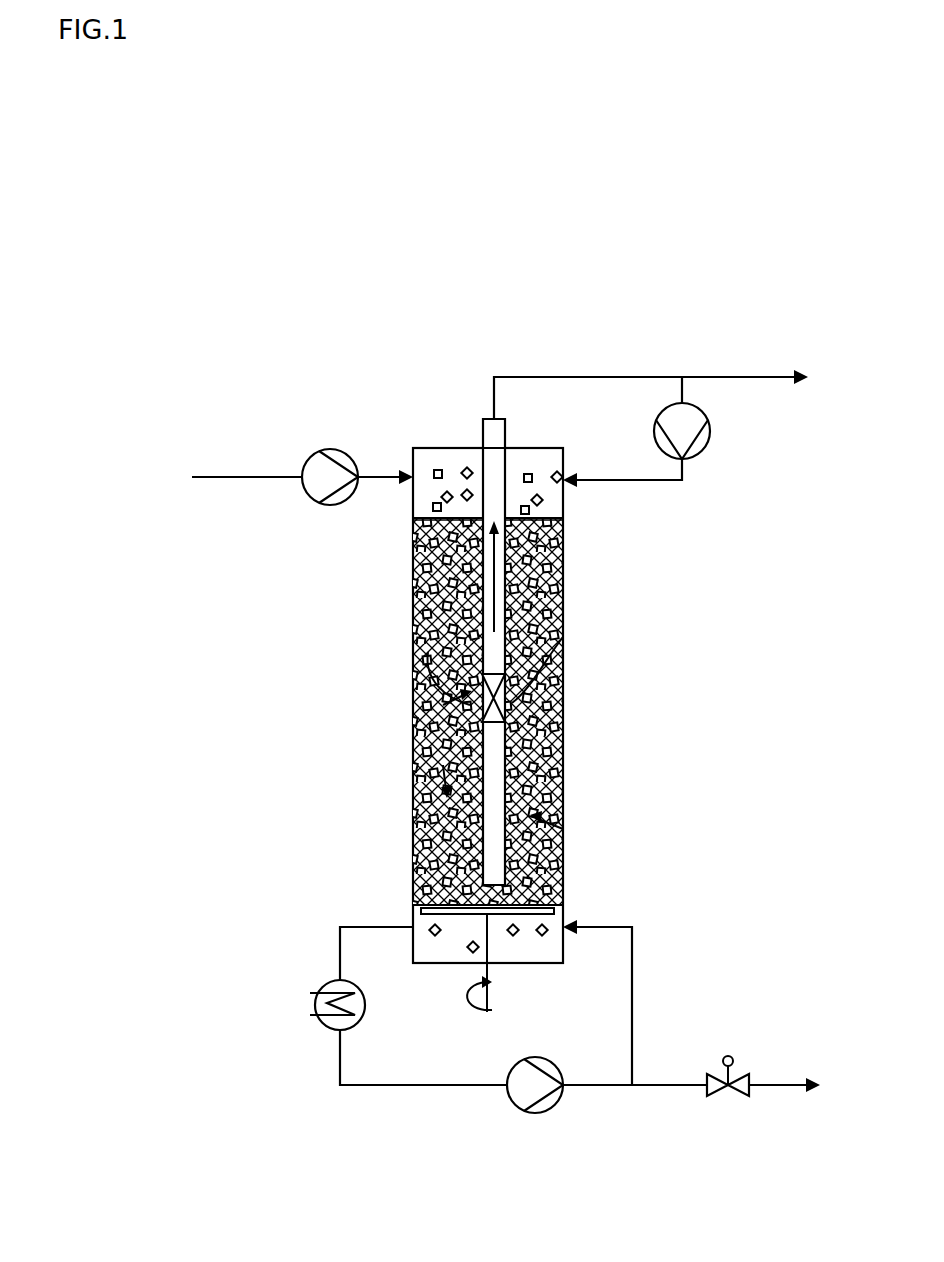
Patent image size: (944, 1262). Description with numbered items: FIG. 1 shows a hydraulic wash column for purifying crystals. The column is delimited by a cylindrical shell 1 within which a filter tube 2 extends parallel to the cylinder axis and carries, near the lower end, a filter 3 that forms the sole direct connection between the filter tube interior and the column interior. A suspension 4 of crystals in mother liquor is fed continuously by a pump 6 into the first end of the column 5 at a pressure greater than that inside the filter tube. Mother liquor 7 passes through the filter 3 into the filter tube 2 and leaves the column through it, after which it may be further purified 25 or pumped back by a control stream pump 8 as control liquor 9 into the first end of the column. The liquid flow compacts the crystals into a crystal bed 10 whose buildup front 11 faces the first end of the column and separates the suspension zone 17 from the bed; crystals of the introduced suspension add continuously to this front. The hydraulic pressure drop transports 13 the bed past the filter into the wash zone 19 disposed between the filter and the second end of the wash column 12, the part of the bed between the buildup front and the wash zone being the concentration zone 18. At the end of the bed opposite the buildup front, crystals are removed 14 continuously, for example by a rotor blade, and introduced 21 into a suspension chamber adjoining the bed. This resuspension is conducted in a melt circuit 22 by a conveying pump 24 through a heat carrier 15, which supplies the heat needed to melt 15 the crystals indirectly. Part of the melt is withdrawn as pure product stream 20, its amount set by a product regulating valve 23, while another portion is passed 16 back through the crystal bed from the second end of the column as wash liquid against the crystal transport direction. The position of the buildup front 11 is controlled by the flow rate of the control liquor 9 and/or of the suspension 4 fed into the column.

The cylindrical shell 1 is at (413, 508).
The filter tube 2 is at (563, 523).
The filter 3 is at (516, 694).
The suspension 4 is at (287, 477).
The first end of the column 5 is at (413, 448).
The pump 6 is at (330, 449).
The mother liquor 7 is at (428, 652).
The control stream pump 8 is at (708, 440).
The control liquor 9 is at (622, 466).
The crystal bed 10 is at (443, 705).
The buildup front 11 is at (413, 520).
The second end of the wash column 12 is at (563, 913).
The transport of the crystal bed 13 is at (443, 765).
The crystal removal 14 is at (413, 903).
The heat carrier 15 is at (322, 1023).
The wash liquid stream 16 is at (563, 829).
The suspension zone 17 is at (563, 497).
The concentration zone 18 is at (563, 658).
The wash zone 19 is at (512, 722).
The pure product stream 20 is at (809, 1085).
The removed crystals introduced into suspension chamber 21 is at (420, 952).
The melt circuit 22 is at (420, 1085).
The product regulating valve 23 is at (735, 1095).
The conveying pump 24 is at (518, 1110).
The further purification 25 is at (673, 391).